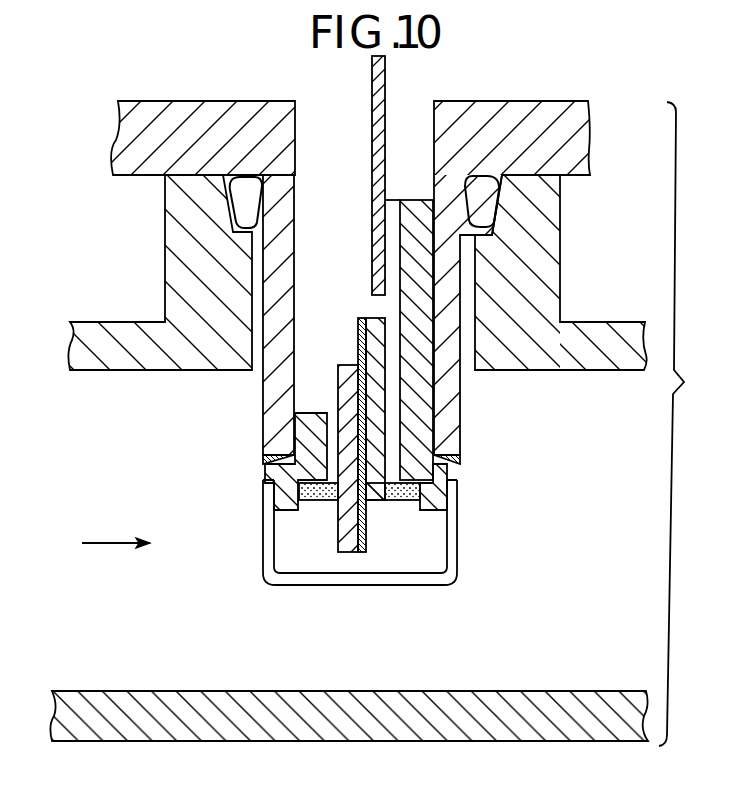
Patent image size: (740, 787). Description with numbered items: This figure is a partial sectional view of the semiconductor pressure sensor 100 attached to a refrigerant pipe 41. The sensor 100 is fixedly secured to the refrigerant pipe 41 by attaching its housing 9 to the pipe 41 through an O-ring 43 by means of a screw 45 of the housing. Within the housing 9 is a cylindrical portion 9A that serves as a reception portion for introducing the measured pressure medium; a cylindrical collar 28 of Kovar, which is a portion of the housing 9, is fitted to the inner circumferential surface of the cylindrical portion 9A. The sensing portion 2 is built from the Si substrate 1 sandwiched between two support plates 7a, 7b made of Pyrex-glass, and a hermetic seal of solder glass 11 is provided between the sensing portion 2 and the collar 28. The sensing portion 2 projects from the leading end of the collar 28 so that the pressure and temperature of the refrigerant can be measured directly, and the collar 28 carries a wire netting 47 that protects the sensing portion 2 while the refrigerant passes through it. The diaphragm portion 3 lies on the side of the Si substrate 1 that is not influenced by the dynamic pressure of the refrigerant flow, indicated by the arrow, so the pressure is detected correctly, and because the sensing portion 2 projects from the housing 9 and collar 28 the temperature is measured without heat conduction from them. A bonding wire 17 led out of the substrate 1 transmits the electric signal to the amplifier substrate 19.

The semiconductor pressure sensor 100 is at (462, 91).
The housing 9 is at (578, 123).
The cylindrical portion 9A is at (447, 392).
The substrate 19 is at (371, 190).
The O-ring 43 is at (250, 195).
The bonding wire 17 is at (358, 326).
The screw 45 is at (255, 357).
The refrigerant pipe 41 is at (626, 350).
The cylindrical collar 28 is at (443, 468).
The solder glass 11 is at (410, 500).
The wire netting 47 is at (456, 548).
The support plate 7a is at (338, 532).
The support plate 7b is at (405, 510).
The Si substrate 1 is at (363, 528).
The sensing portion 2 is at (347, 556).
The diaphragm portion 3 is at (383, 505).